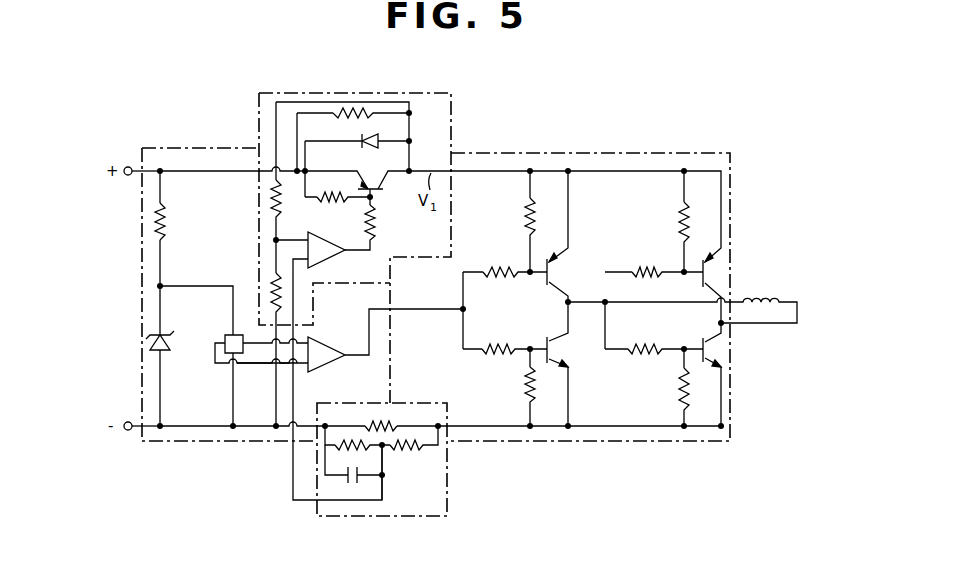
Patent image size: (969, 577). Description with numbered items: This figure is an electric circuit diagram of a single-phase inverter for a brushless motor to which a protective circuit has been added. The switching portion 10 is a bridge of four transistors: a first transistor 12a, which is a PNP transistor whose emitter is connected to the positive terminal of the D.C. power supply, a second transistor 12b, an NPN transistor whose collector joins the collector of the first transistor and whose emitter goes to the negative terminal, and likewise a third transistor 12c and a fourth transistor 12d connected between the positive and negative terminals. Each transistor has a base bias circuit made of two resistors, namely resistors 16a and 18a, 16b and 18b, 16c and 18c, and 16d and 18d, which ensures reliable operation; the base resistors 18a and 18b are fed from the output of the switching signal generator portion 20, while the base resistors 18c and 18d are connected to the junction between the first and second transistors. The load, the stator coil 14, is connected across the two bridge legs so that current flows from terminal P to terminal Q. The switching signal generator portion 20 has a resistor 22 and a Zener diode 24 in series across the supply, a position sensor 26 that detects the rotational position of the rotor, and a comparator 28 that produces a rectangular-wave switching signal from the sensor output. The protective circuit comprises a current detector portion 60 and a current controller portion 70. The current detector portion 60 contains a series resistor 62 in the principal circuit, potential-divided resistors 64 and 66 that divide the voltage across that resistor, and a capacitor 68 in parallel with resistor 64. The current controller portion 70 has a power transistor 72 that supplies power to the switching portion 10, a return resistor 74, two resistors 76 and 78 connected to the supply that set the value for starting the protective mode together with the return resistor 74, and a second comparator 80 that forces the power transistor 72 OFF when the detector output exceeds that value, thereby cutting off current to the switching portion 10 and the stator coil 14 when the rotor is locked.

The switching portion 10 is at (614, 152).
The first transistor 12a is at (566, 274).
The second transistor 12b is at (560, 358).
The third transistor 12c is at (721, 274).
The fourth transistor 12d is at (718, 353).
The stator coil 14 is at (762, 293).
The resistor 16a is at (526, 220).
The resistor 16b is at (526, 380).
The resistor 16c is at (678, 222).
The resistor 16d is at (676, 385).
The base resistor 18a is at (505, 288).
The base resistor 18b is at (487, 343).
The base resistor 18c is at (640, 270).
The base resistor 18d is at (639, 347).
The switching signal generator portion 20 is at (184, 148).
The resistor 22 is at (167, 224).
The Zener diode 24 is at (165, 345).
The position sensor 26 is at (226, 336).
The comparator 28 is at (325, 366).
The current detector portion 60 is at (387, 516).
The series resistor 62 is at (394, 422).
The potential-divided resistor 64 is at (365, 448).
The potential-divided resistor 66 is at (425, 450).
The capacitor 68 is at (362, 480).
The current controller portion 70 is at (445, 93).
The power transistor 72 is at (367, 184).
The return resistor 74 is at (355, 112).
The resistor 76 is at (270, 199).
The resistor 78 is at (270, 290).
The second comparator 80 is at (332, 260).